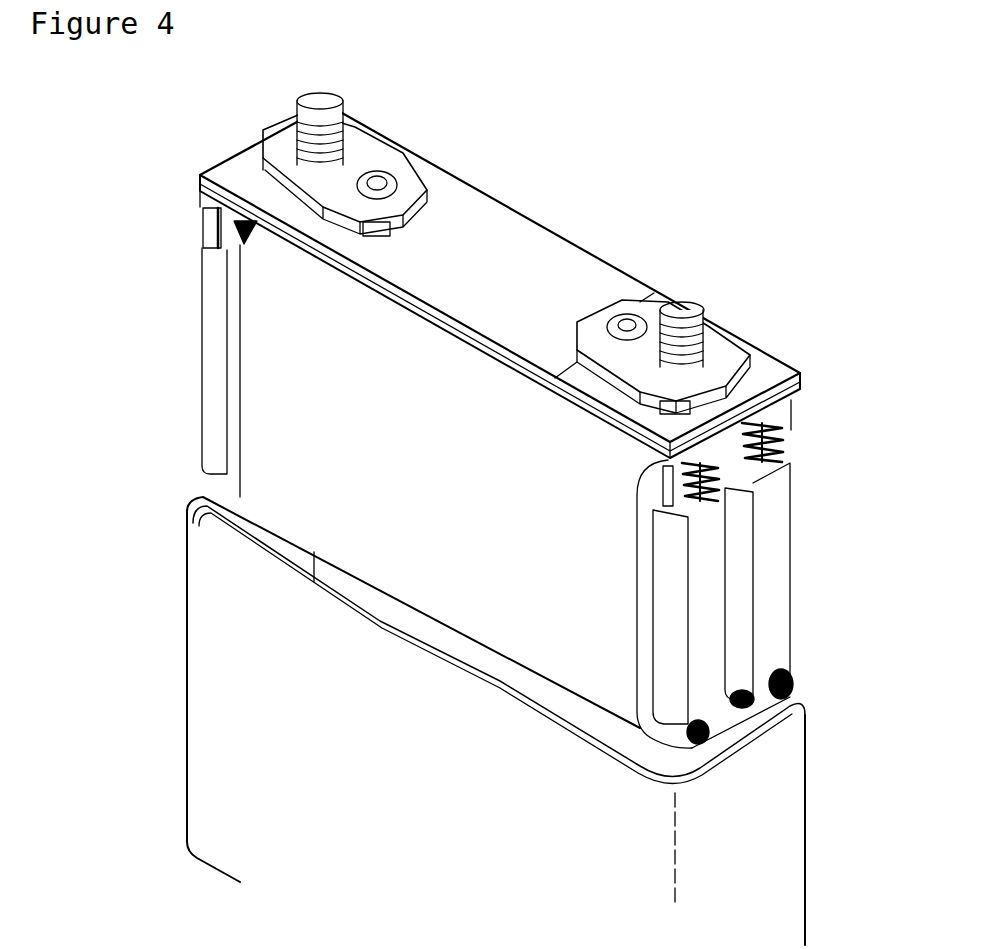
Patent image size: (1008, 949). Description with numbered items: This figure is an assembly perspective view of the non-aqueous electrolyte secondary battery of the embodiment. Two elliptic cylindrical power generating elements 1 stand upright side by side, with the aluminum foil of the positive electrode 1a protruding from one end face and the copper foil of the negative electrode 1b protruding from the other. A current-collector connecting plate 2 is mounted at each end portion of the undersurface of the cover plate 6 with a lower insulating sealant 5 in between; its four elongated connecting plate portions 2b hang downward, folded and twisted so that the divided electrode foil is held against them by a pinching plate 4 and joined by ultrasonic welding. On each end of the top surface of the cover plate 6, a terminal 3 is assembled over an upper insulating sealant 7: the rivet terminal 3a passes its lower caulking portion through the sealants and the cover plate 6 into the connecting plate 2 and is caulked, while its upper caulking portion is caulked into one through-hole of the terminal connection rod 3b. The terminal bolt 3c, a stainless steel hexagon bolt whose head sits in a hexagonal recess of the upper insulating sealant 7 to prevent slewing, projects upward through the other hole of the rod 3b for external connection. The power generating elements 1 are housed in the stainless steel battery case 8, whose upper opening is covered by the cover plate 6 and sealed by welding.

The power generating element 1 is at (437, 578).
The positive electrode 1a is at (636, 575).
The negative electrode 1b is at (228, 506).
The current-collector connecting plate 2 is at (203, 232).
The connecting plate portion 2b is at (200, 468).
The electrode terminal 3 is at (400, 150).
The rivet terminal 3a is at (432, 220).
The terminal connection rod 3b is at (372, 148).
The terminal bolt 3c is at (298, 110).
The pinching plate 4 is at (203, 350).
The lower insulating sealant 5 is at (245, 235).
The cover plate 6 is at (545, 252).
The upper insulating sealant 7 is at (243, 168).
The battery case 8 is at (218, 686).